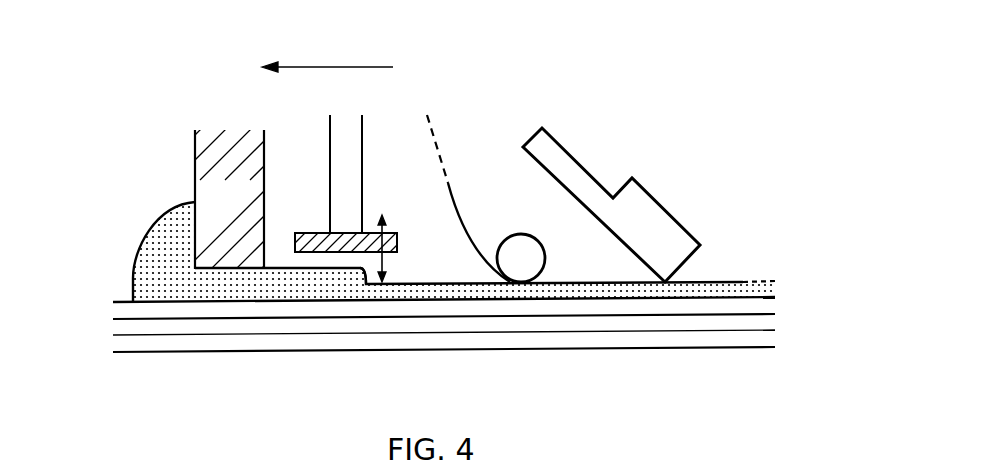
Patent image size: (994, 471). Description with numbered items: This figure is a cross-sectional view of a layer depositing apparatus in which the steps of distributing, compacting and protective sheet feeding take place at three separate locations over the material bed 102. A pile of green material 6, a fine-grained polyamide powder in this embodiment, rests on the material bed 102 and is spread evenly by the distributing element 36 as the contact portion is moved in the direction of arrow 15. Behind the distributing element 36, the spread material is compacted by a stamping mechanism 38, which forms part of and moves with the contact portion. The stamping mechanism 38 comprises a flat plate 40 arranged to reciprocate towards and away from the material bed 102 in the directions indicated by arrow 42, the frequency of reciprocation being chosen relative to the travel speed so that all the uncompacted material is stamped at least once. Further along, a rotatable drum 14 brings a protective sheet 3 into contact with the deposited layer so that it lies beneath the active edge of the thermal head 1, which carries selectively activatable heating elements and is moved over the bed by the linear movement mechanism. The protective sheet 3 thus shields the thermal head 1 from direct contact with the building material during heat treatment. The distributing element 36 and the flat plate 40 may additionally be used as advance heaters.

The thermal head 1 is at (568, 173).
The protective sheet 3 is at (453, 197).
The pile of green material 6 is at (198, 290).
The rotatable drum 14 is at (520, 252).
The arrow 15 is at (355, 67).
The distributing element 36 is at (195, 182).
The stamping mechanism 38 is at (350, 162).
The flat plate 40 is at (396, 232).
The arrow 42 is at (384, 262).
The material bed 102 is at (680, 338).